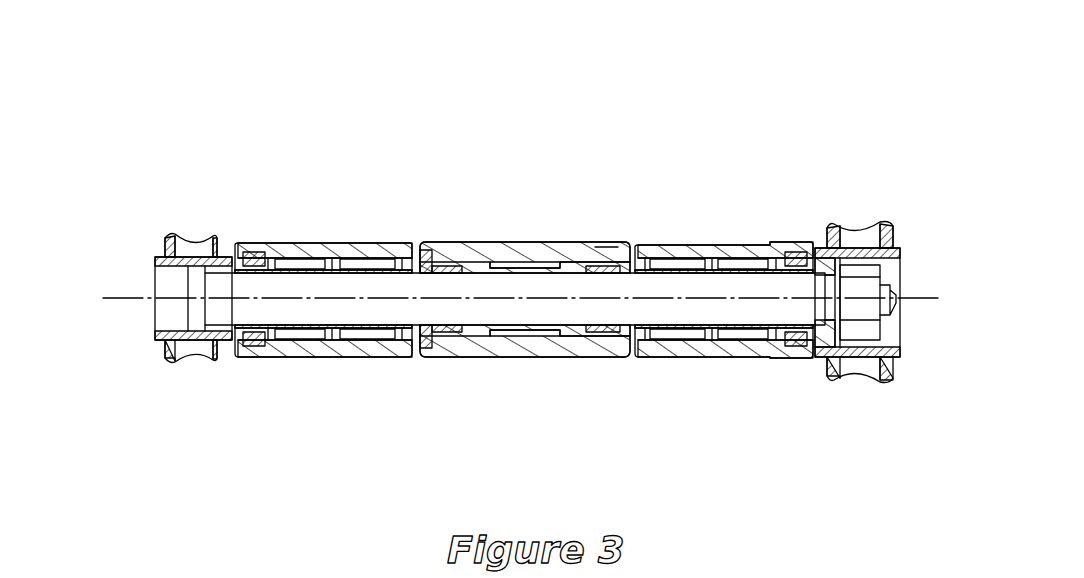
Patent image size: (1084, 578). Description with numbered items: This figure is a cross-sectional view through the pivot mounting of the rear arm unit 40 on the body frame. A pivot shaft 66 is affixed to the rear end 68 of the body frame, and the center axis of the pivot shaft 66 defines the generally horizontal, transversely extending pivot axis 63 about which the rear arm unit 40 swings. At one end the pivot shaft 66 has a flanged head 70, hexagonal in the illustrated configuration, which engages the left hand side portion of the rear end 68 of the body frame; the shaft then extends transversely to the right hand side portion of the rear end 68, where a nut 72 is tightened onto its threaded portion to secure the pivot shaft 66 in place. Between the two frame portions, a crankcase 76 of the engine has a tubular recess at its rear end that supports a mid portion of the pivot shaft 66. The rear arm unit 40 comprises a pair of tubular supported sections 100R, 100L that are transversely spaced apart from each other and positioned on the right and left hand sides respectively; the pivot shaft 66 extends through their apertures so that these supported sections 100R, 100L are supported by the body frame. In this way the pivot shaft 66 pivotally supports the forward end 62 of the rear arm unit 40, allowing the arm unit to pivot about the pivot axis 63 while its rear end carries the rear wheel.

The rear arm unit 40 is at (550, 234).
The forward end 62 is at (762, 229).
The pivot axis 63 is at (128, 298).
The pivot shaft 66 is at (517, 290).
The rear end of the body frame 68 is at (167, 352).
The flanged head 70 is at (193, 308).
The nut 72 is at (862, 277).
The crankcase 76 is at (595, 252).
The left supported section 100L is at (330, 243).
The right supported section 100R is at (715, 247).